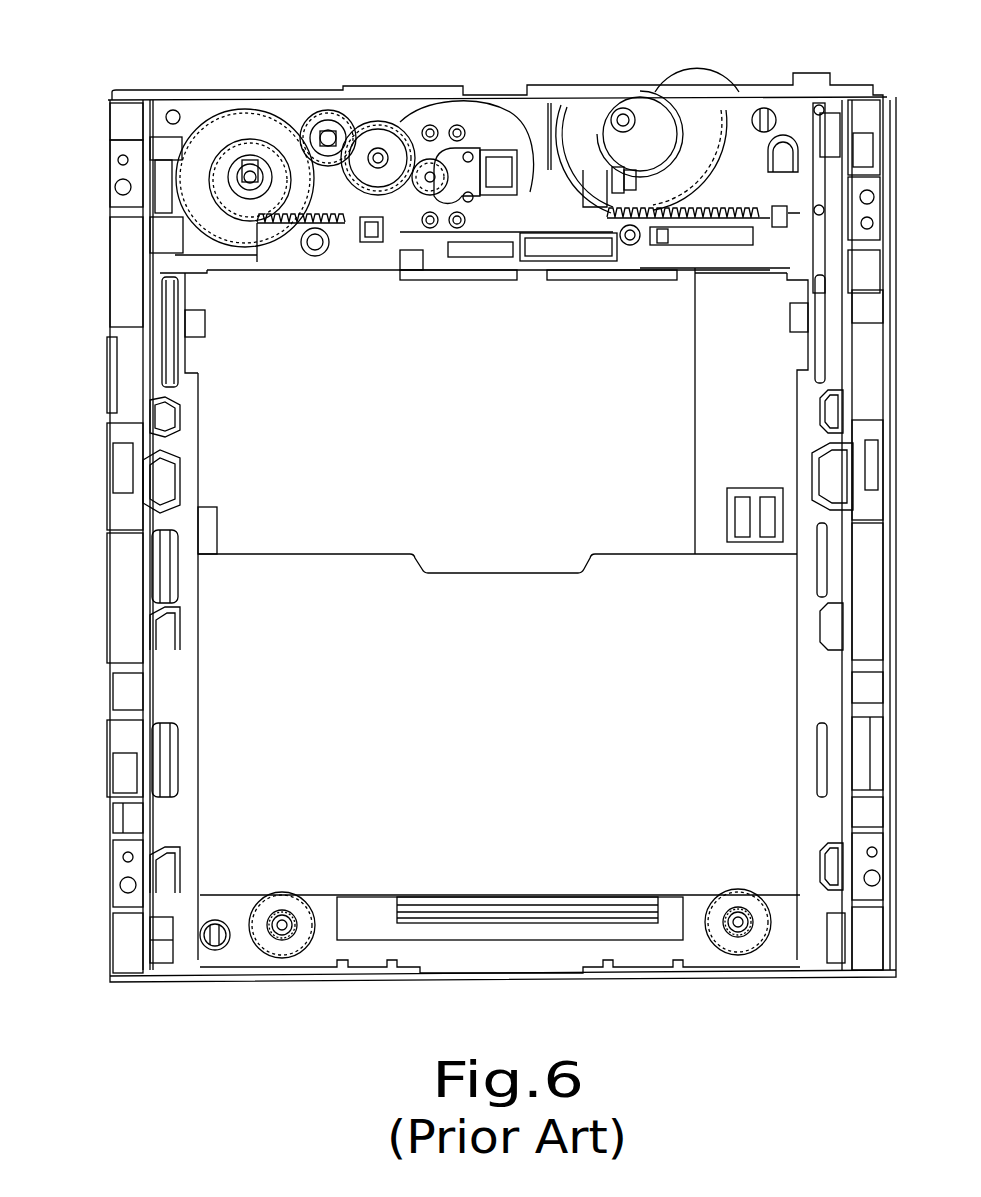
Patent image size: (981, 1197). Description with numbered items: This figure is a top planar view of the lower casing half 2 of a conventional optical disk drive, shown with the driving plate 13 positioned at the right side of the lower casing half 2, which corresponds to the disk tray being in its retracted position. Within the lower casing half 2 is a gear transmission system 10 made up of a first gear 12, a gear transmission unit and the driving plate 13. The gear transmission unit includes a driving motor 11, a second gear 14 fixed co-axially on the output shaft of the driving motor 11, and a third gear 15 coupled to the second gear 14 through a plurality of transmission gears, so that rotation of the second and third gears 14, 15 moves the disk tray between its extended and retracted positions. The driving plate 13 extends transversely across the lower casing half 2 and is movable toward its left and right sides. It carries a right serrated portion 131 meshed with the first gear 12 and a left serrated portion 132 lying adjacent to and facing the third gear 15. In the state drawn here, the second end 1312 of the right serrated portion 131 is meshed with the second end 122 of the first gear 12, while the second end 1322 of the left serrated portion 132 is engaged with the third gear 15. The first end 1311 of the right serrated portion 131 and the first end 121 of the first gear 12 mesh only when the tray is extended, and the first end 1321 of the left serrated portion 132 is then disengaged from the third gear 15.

The lower casing half 2 is at (103, 53).
The gear transmission system 10 is at (497, 88).
The driving motor 11 is at (467, 178).
The first gear 12 is at (680, 94).
The first end of the first gear 121 is at (707, 104).
The second end of the first gear 122 is at (563, 173).
The driving plate 13 is at (402, 242).
The right serrated portion 131 is at (720, 205).
The first end of the right serrated portion 1311 is at (757, 210).
The second end of the right serrated portion 1312 is at (630, 245).
The left serrated portion 132 is at (300, 249).
The first end of the left serrated portion 1321 is at (343, 168).
The second end of the left serrated portion 1322 is at (260, 220).
The second gear 14 is at (431, 172).
The third gear 15 is at (252, 172).